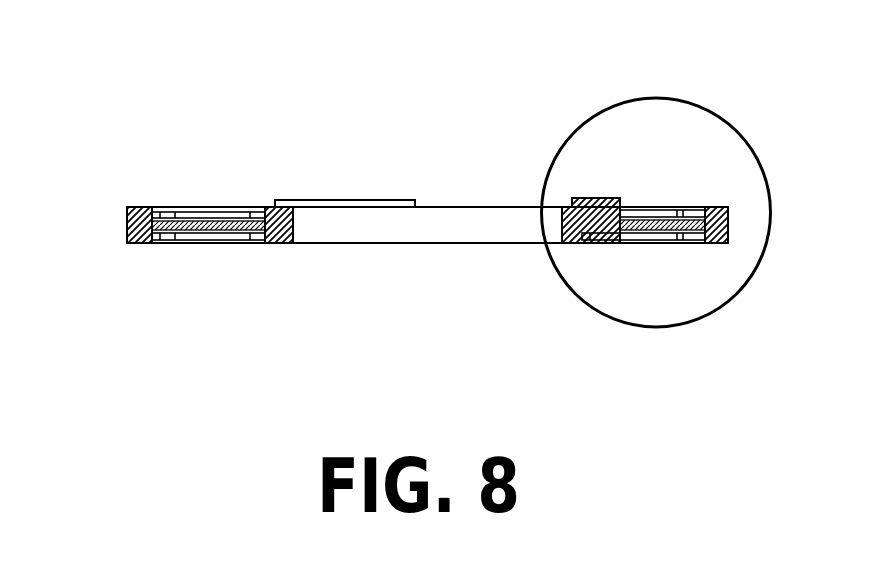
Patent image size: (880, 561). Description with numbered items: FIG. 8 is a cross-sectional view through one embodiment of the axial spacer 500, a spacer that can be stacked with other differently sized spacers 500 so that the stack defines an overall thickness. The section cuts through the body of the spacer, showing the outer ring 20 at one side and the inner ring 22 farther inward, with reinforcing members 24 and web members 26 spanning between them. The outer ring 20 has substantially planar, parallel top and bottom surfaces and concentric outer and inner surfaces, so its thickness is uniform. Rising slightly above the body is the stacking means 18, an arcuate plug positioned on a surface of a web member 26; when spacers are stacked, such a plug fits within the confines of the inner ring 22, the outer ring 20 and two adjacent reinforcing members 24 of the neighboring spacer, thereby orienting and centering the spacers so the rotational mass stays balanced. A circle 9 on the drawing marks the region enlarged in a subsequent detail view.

The axial spacer 500 is at (104, 187).
The outer ring 20 is at (127, 229).
The reinforcing member 24 is at (203, 207).
The web member 26 is at (203, 243).
The inner ring 22 is at (264, 207).
The stacking means 18 is at (417, 162).
The detail circle (enlarged area) 9 is at (716, 82).